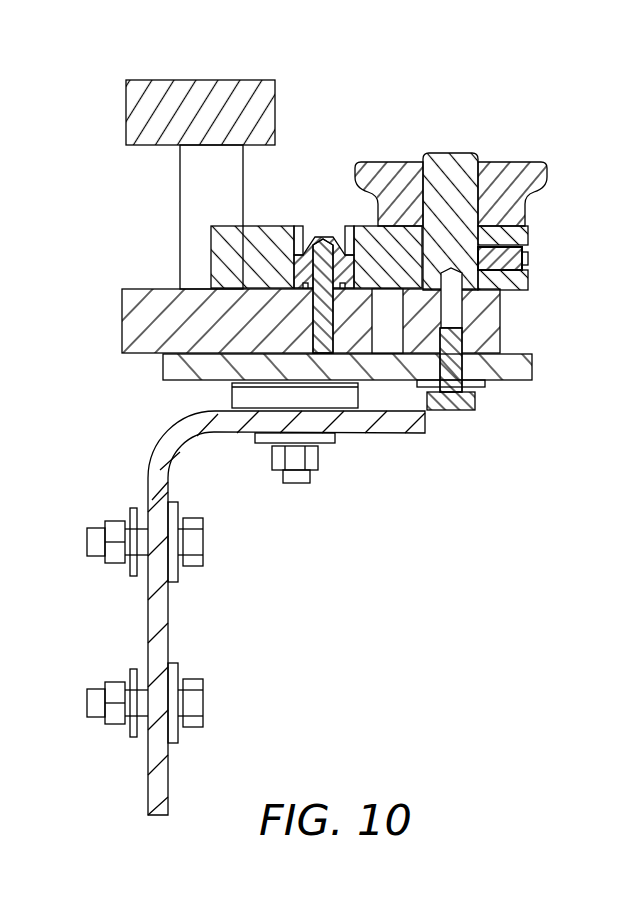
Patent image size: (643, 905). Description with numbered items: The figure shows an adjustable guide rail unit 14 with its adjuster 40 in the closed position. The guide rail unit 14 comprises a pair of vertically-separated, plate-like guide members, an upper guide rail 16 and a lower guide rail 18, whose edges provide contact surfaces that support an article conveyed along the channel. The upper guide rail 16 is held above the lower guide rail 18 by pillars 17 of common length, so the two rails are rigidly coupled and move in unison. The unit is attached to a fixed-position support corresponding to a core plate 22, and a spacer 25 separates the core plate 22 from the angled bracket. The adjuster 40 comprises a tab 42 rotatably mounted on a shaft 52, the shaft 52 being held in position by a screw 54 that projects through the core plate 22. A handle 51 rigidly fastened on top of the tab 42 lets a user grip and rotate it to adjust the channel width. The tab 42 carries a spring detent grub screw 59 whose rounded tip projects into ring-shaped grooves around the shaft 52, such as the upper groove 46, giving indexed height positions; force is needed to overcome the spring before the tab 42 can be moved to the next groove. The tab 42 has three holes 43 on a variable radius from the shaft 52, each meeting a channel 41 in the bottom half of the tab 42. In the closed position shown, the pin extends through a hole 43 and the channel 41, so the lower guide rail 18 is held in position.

The guide rail unit 14 is at (108, 259).
The upper guide rail 16 is at (200, 80).
The pillar 17 is at (180, 216).
The lower guide rail 18 is at (122, 322).
The core plate 22 is at (163, 368).
The spacer 25 is at (232, 393).
The adjuster 40 is at (482, 280).
The channel 41 is at (342, 275).
The tab 42 is at (277, 226).
The hole 43 is at (325, 236).
The upper ring-shaped groove 46 is at (480, 226).
The handle 51 is at (549, 172).
The shaft 52 is at (453, 152).
The screw 54 is at (452, 410).
The spring detent grub screw 59 is at (530, 258).